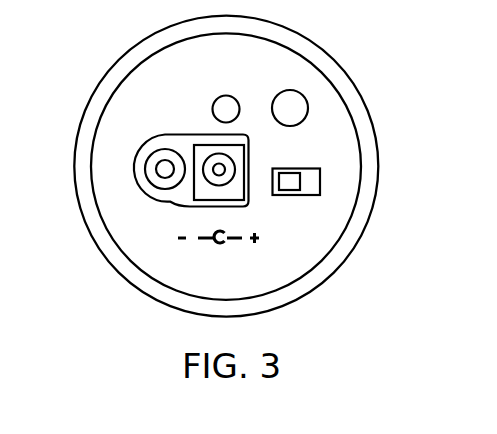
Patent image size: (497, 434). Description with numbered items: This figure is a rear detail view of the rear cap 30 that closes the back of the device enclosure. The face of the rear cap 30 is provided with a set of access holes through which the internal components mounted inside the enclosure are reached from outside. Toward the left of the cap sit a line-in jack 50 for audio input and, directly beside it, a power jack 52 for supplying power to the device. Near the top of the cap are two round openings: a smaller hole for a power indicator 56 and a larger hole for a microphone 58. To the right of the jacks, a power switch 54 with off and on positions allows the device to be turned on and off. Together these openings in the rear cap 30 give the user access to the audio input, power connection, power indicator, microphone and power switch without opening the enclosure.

The rear cap 30 is at (297, 257).
The line-in jack 50 is at (153, 171).
The power jack 52 is at (219, 170).
The power switch 54 is at (292, 182).
The power indicator 56 is at (226, 109).
The microphone 58 is at (291, 109).